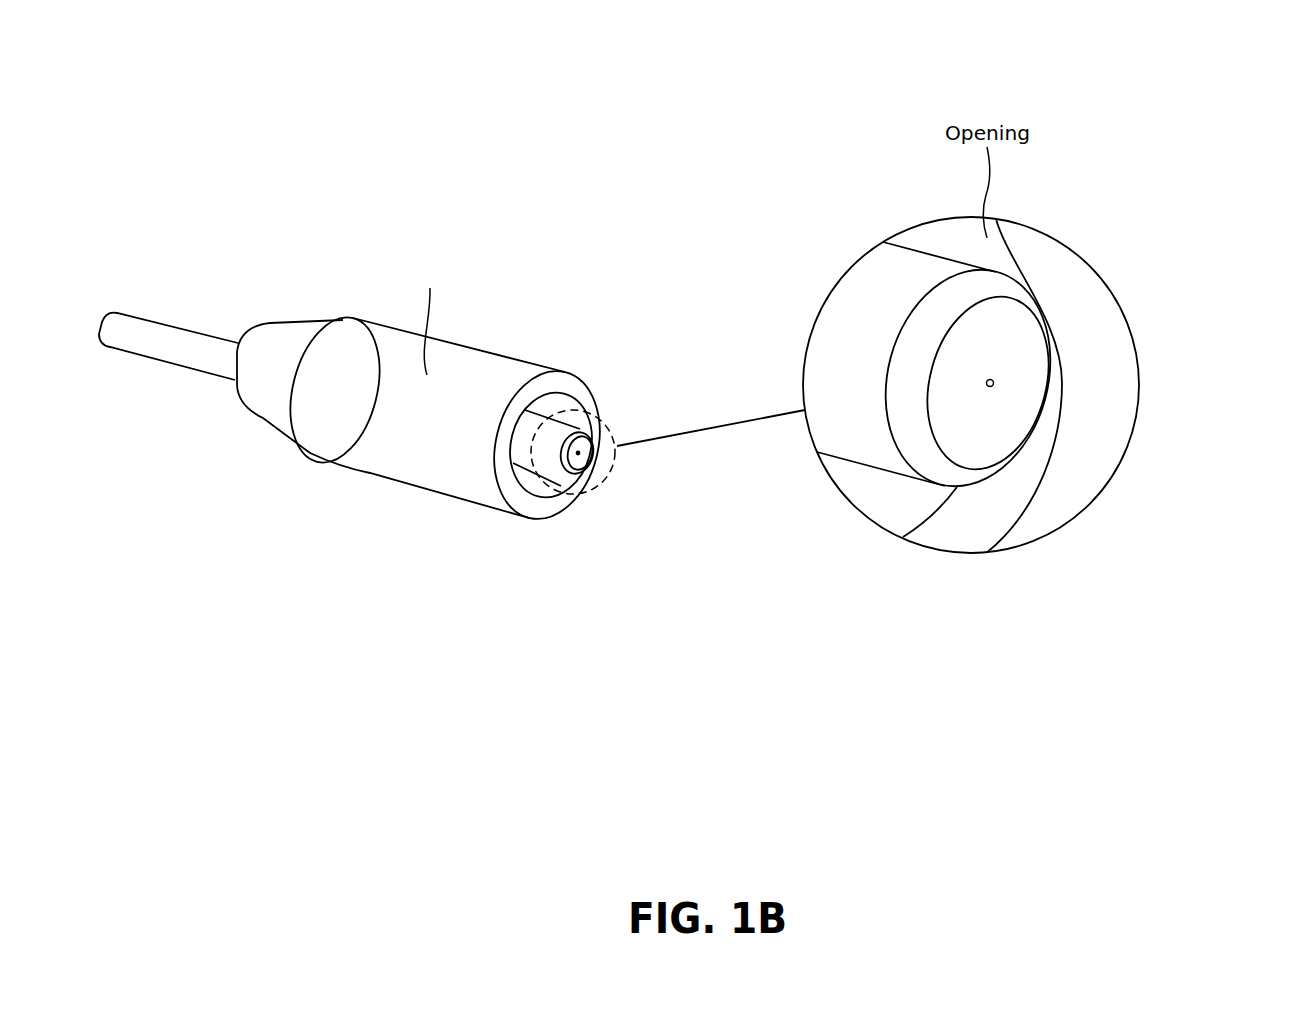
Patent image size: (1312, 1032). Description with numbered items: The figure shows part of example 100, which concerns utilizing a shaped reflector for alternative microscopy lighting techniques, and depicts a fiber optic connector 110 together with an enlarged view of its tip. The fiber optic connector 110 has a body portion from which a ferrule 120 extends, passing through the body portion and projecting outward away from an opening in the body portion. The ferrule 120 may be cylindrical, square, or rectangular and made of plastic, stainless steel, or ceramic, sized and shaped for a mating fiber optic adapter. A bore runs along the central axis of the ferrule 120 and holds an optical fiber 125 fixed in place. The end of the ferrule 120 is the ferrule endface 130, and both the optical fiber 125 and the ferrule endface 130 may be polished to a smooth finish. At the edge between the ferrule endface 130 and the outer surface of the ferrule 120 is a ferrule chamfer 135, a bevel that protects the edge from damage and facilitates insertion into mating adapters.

The example 100 is at (198, 43).
The fiber optic connector 110 is at (441, 466).
The ferrule 120 is at (863, 272).
The optical fiber 125 is at (1004, 378).
The ferrule endface 130 is at (1022, 352).
The ferrule chamfer 135 is at (920, 457).